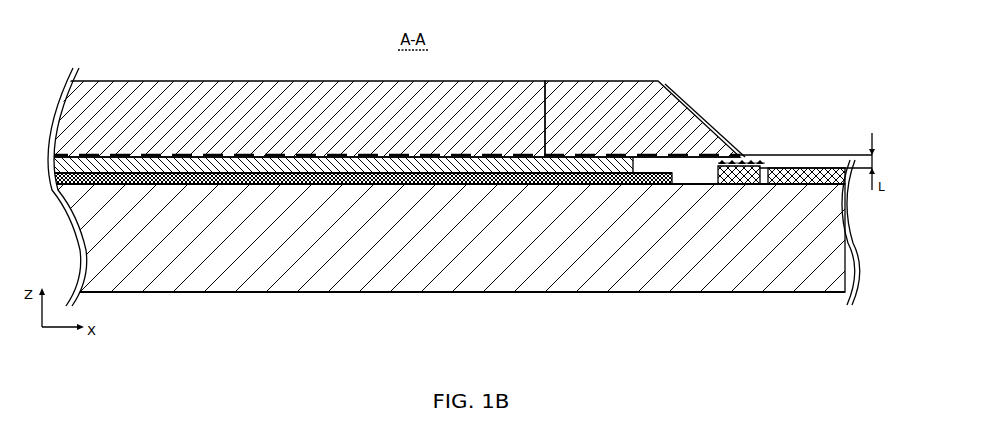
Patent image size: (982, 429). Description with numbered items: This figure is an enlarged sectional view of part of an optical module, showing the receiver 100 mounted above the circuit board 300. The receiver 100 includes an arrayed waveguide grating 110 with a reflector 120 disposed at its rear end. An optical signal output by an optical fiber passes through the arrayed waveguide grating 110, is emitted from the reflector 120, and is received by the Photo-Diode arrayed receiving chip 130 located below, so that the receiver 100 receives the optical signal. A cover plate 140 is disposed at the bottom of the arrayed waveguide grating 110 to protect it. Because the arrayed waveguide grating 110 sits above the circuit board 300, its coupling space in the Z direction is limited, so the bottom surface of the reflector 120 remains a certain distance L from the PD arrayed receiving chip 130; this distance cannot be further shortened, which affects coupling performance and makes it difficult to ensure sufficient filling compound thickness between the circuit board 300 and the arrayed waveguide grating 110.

The receiver 100 is at (463, 126).
The arrayed waveguide grating 110 is at (318, 124).
The reflector 120 is at (604, 124).
The Photo-Diode (PD) arrayed receiving chip 130 is at (758, 168).
The cover plate 140 is at (168, 169).
The circuit board 300 is at (382, 250).